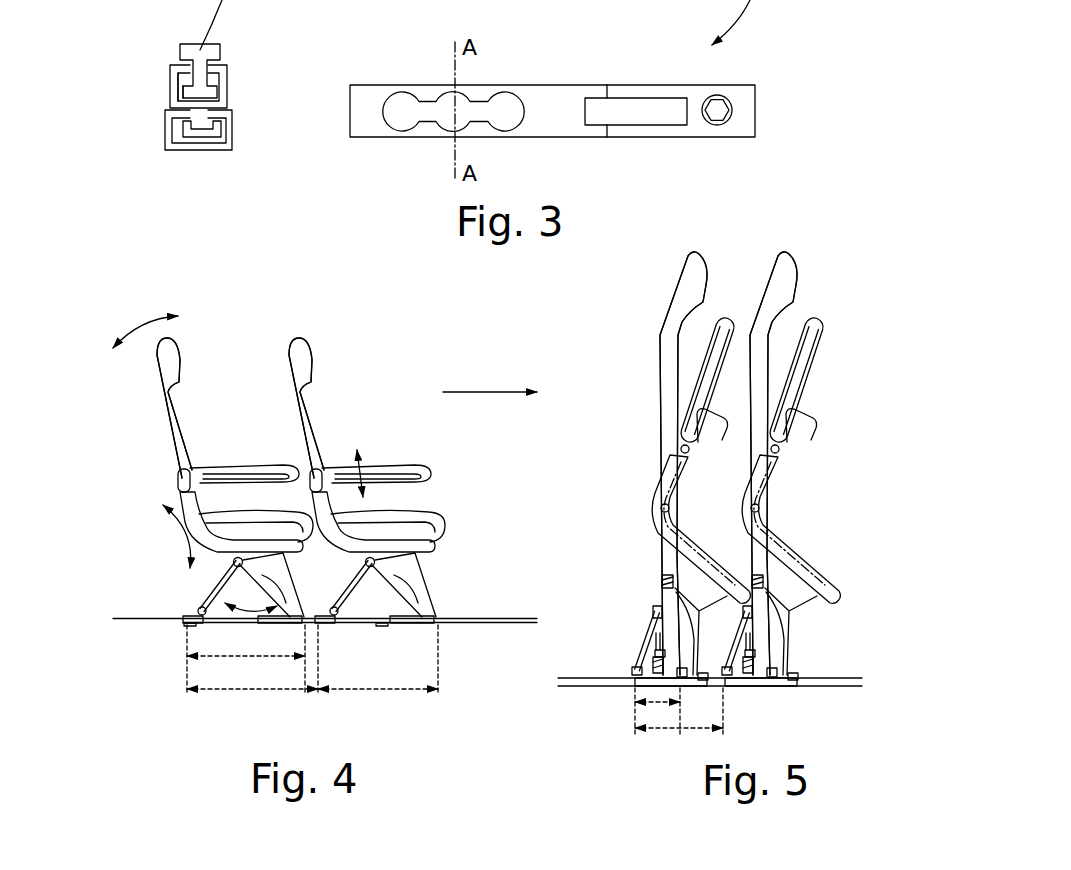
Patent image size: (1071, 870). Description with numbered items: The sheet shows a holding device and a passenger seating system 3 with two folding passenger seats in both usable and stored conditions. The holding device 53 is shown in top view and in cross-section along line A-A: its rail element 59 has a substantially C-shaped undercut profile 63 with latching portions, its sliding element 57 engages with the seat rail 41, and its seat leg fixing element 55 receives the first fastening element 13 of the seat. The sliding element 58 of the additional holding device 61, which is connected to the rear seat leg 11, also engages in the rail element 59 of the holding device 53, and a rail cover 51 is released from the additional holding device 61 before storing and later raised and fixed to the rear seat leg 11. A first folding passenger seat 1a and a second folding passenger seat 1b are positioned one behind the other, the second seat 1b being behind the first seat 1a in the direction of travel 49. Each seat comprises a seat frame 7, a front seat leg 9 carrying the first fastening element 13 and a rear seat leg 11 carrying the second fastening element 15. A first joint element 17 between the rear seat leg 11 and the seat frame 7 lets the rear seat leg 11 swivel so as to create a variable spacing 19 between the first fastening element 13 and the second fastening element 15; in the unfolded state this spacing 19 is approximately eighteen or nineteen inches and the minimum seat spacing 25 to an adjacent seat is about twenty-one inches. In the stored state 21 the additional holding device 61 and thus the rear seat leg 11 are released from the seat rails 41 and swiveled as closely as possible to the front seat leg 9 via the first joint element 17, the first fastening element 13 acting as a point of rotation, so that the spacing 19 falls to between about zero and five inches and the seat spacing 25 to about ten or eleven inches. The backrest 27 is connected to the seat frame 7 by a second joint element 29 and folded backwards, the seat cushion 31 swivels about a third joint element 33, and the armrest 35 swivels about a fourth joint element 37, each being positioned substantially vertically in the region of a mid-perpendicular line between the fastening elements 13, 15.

In FIG. 4, the first folding passenger seat 1a is at (314, 335).
In FIG. 5, the first folding passenger seat 1a is at (806, 257).
In FIG. 4, the second folding passenger seat 1b is at (185, 334).
In FIG. 5, the second folding passenger seat 1b is at (708, 251).
In FIG. 4, the passenger seating system 3 is at (410, 356).
In FIG. 5, the passenger seating system 3 is at (834, 383).
In FIG. 4, the seat frame 7 is at (210, 527).
In FIG. 5, the seat frame 7 is at (657, 548).
In FIG. 4, the front seat leg 9 is at (288, 585).
In FIG. 5, the front seat leg 9 is at (696, 634).
In FIG. 4, the rear seat leg 11 is at (222, 586).
In FIG. 5, the rear seat leg 11 is at (653, 630).
In FIG. 4, the first fastening element 13 is at (307, 610).
In FIG. 5, the first fastening element 13 is at (706, 680).
In FIG. 4, the second fastening element 15 is at (192, 612).
In FIG. 5, the second fastening element 15 is at (646, 665).
In FIG. 4, the first joint element 17 is at (232, 560).
In FIG. 5, the first joint element 17 is at (661, 579).
In FIG. 4, the spacing 19 is at (262, 658).
In FIG. 5, the spacing 19 is at (640, 705).
In FIG. 5, the stored state 21 is at (612, 356).
In FIG. 4, the seat spacing 25 is at (233, 692).
In FIG. 5, the seat spacing 25 is at (678, 730).
In FIG. 4, the backrest 27 is at (180, 471).
In FIG. 5, the backrest 27 is at (667, 408).
In FIG. 5, the second joint element 29 is at (750, 510).
In FIG. 4, the seat cushion 31 is at (200, 515).
In FIG. 5, the third joint element 33 is at (823, 325).
In FIG. 4, the armrest 35 is at (238, 466).
In FIG. 5, the armrest 35 is at (718, 328).
In FIG. 5, the fourth joint element 37 is at (683, 451).
In FIG. 3, the seat rail 41 is at (233, 144).
In FIG. 4, the seat rail 41 is at (505, 626).
In FIG. 5, the seat rail 41 is at (850, 689).
In FIG. 4, the direction of travel 49 is at (483, 393).
In FIG. 4, the rail cover 51 is at (190, 626).
In FIG. 3, the holding device 53 is at (233, 83).
In FIG. 5, the holding device 53 is at (668, 682).
In FIG. 3, the seat leg fixing element 55 is at (655, 103).
In FIG. 3, the sliding element 57 is at (215, 127).
In FIG. 3, the sliding element 58 is at (185, 88).
In FIG. 3, the rail element 59 is at (178, 68).
In FIG. 5, the additional holding device 61 is at (728, 666).
In FIG. 3, the undercut profile 63 is at (180, 78).